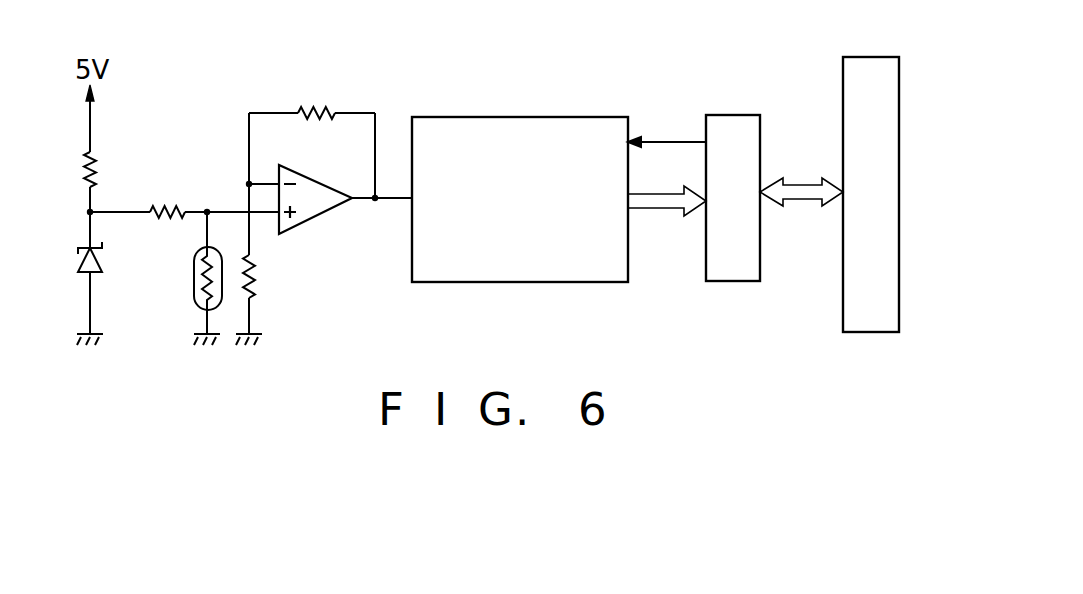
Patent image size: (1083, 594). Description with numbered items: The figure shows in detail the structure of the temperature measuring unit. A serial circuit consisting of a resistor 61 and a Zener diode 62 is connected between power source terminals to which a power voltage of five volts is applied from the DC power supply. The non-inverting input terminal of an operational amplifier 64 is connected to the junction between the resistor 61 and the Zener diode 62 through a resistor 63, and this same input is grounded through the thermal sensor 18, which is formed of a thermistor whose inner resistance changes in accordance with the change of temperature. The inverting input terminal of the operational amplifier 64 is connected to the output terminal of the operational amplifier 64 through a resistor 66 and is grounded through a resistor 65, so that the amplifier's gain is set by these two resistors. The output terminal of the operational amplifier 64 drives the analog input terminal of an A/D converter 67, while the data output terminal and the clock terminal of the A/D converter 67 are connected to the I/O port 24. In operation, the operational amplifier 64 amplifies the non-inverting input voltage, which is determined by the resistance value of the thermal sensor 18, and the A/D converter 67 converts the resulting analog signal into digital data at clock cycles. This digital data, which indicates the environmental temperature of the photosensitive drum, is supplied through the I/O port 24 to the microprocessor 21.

The resistor 61 is at (87, 157).
The Zener diode 62 is at (84, 254).
The resistor 63 is at (172, 208).
The operational amplifier 64 is at (328, 208).
The resistor 65 is at (261, 283).
The resistor 66 is at (325, 113).
The A/D converter 67 is at (530, 122).
The thermal sensor 18 is at (194, 283).
The I/O port 24 is at (730, 123).
The microprocessor 21 is at (865, 63).